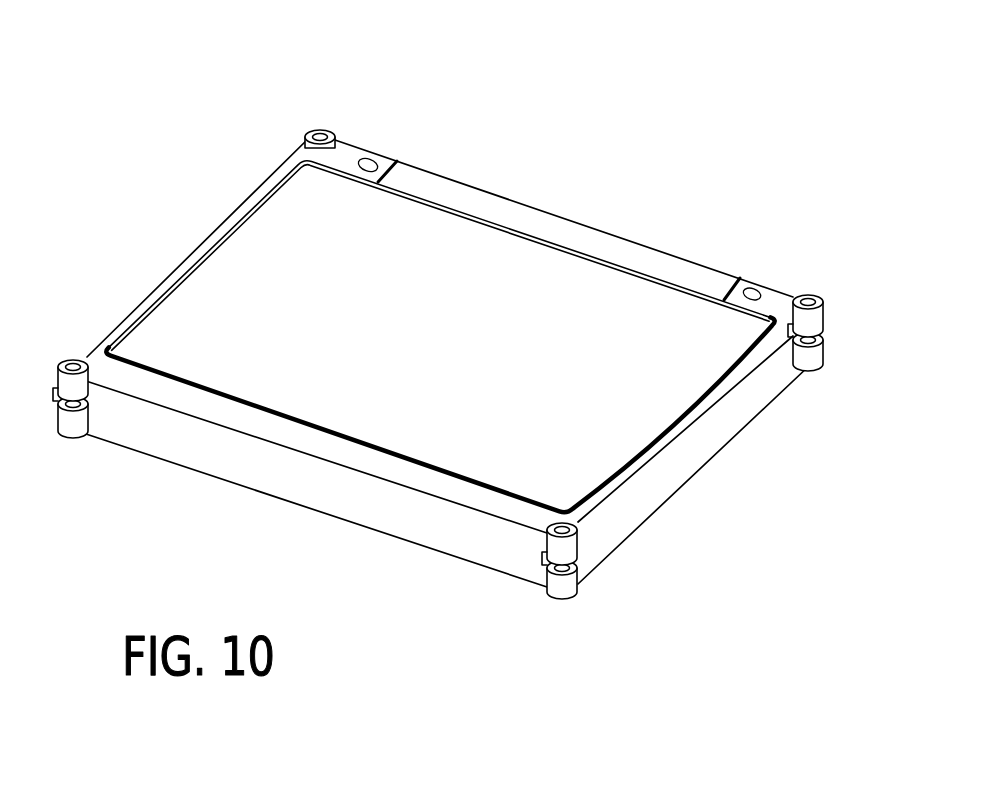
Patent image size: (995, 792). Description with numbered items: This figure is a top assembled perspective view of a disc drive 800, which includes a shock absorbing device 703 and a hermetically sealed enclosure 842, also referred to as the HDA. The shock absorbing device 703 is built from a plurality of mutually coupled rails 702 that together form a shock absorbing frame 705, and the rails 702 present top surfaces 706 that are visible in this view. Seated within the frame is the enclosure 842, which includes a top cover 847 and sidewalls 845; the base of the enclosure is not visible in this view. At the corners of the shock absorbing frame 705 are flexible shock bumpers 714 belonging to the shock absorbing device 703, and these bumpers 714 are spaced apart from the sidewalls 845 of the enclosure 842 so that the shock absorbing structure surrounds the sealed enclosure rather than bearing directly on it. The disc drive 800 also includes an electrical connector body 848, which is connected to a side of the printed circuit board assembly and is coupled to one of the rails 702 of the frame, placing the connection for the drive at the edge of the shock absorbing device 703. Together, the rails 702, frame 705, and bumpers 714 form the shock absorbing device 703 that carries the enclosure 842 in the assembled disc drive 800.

The disc drive 800 is at (636, 104).
The rails 702 is at (150, 287).
The shock absorbing device 703 is at (717, 453).
The shock absorbing frame 705 is at (228, 214).
The top surfaces 706 is at (200, 247).
The flexible shock bumpers 714 is at (310, 131).
The hermetically sealed enclosure 842 is at (447, 322).
The sidewalls 845 is at (271, 191).
The top cover 847 is at (490, 244).
The electrical connector body 848 is at (574, 232).